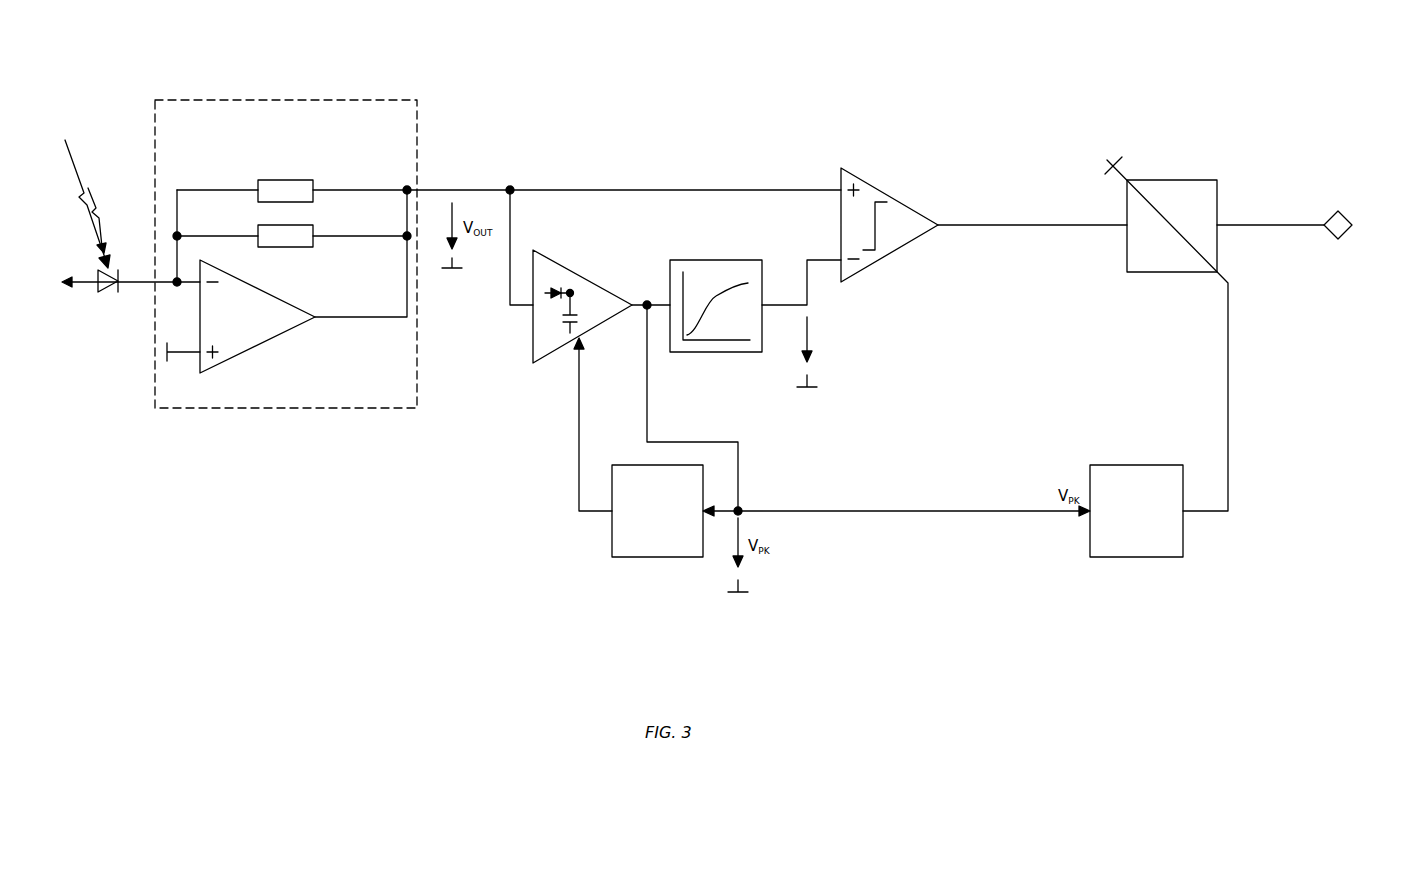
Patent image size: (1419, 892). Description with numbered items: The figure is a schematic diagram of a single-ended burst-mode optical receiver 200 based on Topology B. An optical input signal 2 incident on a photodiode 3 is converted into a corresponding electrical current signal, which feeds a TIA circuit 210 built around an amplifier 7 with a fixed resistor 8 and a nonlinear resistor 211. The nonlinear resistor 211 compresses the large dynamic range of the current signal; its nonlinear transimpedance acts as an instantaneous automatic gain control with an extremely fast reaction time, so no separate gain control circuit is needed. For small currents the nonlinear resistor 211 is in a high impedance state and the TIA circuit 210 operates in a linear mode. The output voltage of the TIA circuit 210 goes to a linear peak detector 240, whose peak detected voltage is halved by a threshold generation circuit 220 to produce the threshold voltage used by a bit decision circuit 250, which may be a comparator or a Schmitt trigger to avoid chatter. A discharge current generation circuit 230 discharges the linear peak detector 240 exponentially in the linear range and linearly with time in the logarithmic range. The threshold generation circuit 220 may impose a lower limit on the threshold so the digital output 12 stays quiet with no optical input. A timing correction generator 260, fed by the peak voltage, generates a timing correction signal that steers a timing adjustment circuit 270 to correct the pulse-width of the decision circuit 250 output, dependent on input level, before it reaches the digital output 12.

The optical input signal 2 is at (82, 189).
The photodiode 3 is at (104, 270).
The amplifier 7 is at (253, 289).
The fixed resistor 8 is at (293, 247).
The digital output 12 is at (1337, 240).
The burst-mode optical Rx 200 is at (907, 64).
The TIA circuit 210 is at (342, 100).
The nonlinear resistor 211 is at (293, 203).
The threshold generation circuit 220 is at (758, 260).
The discharge current generation circuit 230 is at (635, 465).
The linear peak detector 240 is at (588, 282).
The bit decision circuit 250 is at (898, 204).
The timing correction generator 260 is at (1110, 465).
The timing adjustment circuit 270 is at (1190, 182).